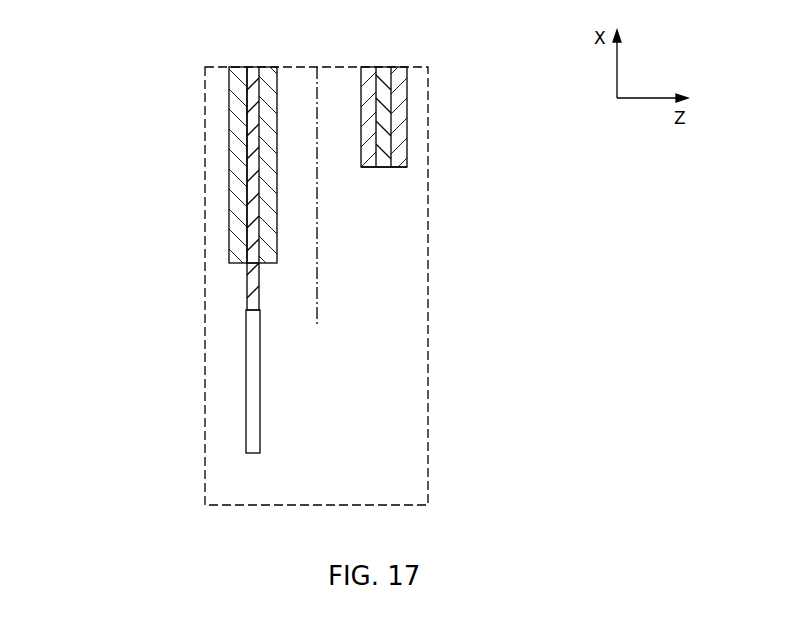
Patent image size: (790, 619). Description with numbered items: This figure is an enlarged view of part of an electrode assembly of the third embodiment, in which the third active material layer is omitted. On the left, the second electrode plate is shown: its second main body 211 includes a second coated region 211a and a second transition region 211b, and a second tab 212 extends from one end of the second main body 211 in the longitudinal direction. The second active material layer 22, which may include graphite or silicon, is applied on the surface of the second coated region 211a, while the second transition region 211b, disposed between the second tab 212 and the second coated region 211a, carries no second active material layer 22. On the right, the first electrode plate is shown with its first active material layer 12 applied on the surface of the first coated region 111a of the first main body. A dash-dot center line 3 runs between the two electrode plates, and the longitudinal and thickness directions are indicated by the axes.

The center line / axis 3 is at (318, 308).
The first active material layer 12 is at (361, 93).
The second active material layer 22 is at (237, 117).
The first coated region 111a is at (383, 168).
The second main body 211 is at (122, 180).
The second coated region 211a is at (248, 200).
The second transition region 211b is at (252, 288).
The second tab 212 is at (259, 394).